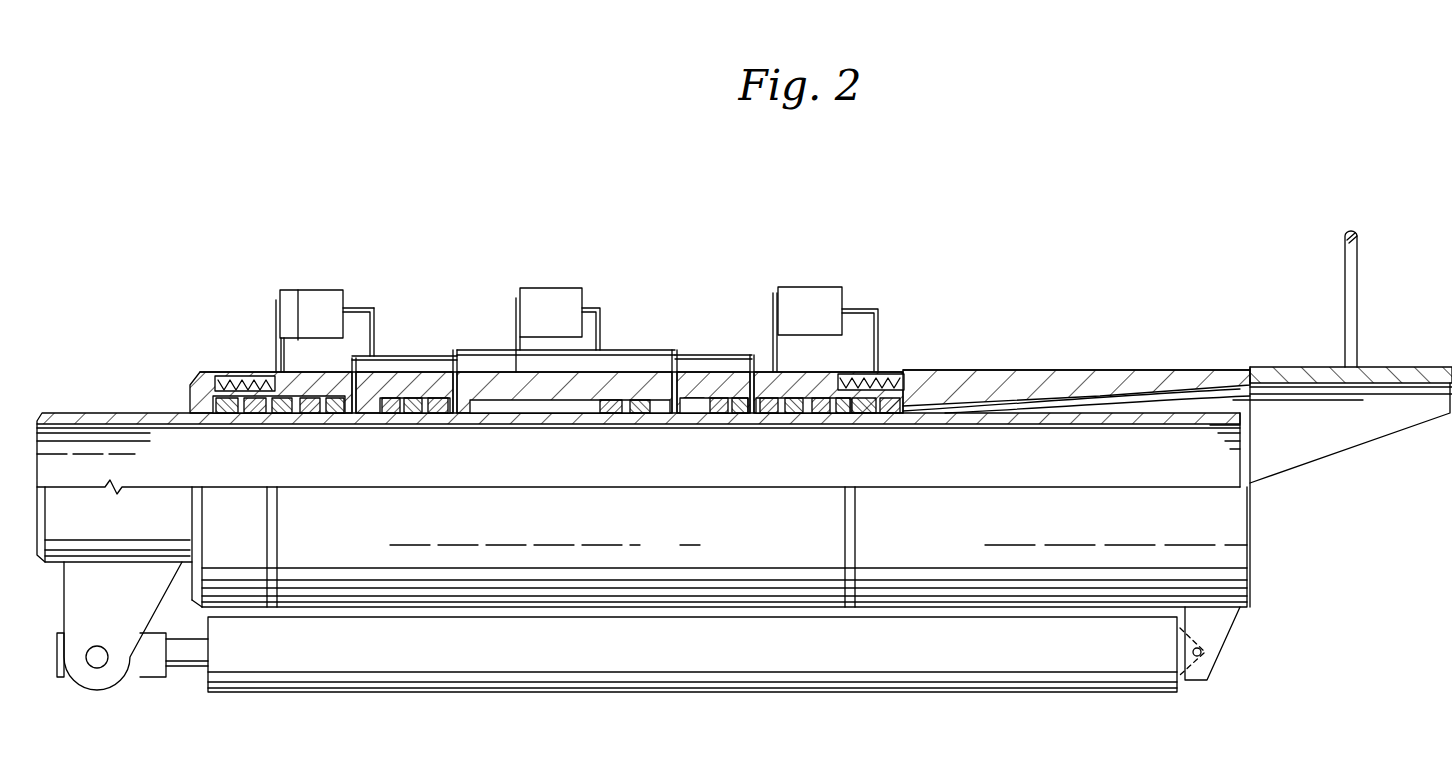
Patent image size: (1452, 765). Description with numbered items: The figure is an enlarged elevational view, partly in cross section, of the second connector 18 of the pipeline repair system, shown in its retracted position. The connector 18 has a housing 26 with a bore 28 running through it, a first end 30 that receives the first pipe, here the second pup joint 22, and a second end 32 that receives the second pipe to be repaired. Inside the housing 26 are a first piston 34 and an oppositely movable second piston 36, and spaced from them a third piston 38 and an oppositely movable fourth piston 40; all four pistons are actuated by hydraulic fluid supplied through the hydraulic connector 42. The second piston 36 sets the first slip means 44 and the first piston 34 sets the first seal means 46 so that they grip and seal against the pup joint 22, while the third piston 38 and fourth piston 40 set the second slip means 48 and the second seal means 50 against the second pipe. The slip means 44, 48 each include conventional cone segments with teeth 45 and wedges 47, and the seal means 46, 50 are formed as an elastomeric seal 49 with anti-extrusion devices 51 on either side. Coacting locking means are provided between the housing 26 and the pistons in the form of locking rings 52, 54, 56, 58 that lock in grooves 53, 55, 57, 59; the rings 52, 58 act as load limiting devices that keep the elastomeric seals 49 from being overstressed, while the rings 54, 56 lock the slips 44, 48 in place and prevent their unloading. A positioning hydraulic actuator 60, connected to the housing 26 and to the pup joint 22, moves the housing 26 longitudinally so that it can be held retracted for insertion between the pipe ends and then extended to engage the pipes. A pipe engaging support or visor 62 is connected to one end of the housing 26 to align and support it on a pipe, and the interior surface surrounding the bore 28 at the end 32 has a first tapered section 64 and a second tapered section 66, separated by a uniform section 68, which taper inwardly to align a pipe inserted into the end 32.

The second connector 18 is at (925, 358).
The second pup joint 22 is at (92, 413).
The housing 26 is at (980, 368).
The bore 28 is at (543, 424).
The first end 30 is at (190, 387).
The second end 32 is at (1250, 545).
The first piston 34 is at (303, 428).
The second piston 36 is at (354, 424).
The third piston 38 is at (765, 424).
The fourth piston 40 is at (813, 424).
The hydraulic connector 42 is at (331, 290).
The first slip means 44 is at (452, 410).
The teeth 45 is at (420, 424).
The first seal means 46 is at (243, 388).
The wedges 47 is at (428, 410).
The second slip means 48 is at (700, 410).
The elastomeric seal 49 is at (248, 424).
The second seal means 50 is at (888, 380).
The anti-extrusion devices 51 is at (220, 424).
The locking ring 52 is at (298, 320).
The groove 53 is at (290, 424).
The locking ring 54 is at (400, 405).
The groove 55 is at (363, 424).
The locking ring 56 is at (731, 410).
The groove 57 is at (746, 424).
The locking ring 58 is at (845, 372).
The groove 59 is at (817, 424).
The positioning hydraulic actuator 60 is at (943, 692).
The visor 62 is at (1403, 367).
The first tapered section 64 is at (1183, 395).
The second tapered section 66 is at (1031, 422).
The uniform section 68 is at (1090, 422).